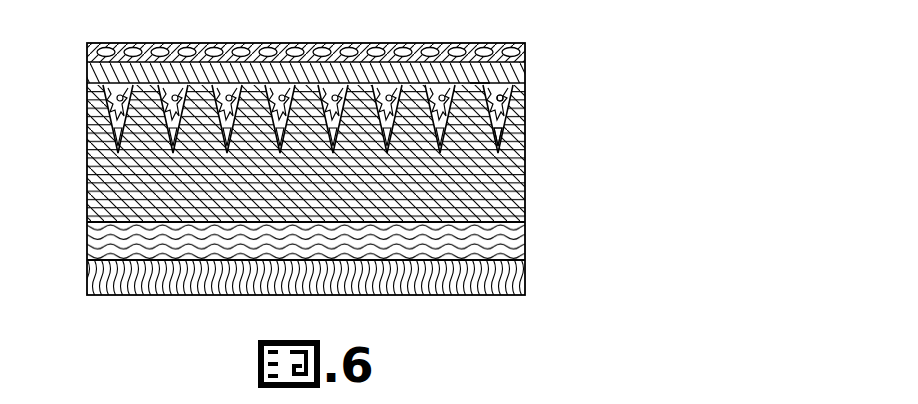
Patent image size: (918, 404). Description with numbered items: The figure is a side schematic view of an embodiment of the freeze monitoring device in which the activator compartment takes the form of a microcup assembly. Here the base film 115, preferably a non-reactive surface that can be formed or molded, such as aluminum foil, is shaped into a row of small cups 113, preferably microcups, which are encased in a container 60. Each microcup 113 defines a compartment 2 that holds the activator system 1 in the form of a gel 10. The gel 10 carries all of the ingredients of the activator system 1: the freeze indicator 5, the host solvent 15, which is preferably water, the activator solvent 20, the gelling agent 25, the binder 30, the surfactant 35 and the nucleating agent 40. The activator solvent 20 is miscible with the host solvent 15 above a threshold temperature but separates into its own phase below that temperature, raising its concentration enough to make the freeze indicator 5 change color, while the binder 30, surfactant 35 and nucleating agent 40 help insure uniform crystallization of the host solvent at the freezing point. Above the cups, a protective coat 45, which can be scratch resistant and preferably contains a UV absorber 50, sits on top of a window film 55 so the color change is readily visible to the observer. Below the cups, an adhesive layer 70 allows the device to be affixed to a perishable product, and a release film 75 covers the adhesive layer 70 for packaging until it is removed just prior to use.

The activator system 1 is at (117, 142).
The compartment 2 is at (525, 92).
The freeze indicator 5 is at (483, 82).
The gel 10 is at (505, 113).
The host solvent 15 is at (387, 85).
The activator solvent 20 is at (478, 84).
The gelling agent 25 is at (521, 163).
The binder 30 is at (437, 87).
The surfactant 35 is at (287, 85).
The nucleating agent 40 is at (503, 125).
The protective coat 45 is at (203, 42).
The UV absorber 50 is at (244, 48).
The window film 55 is at (88, 73).
The container 60 is at (525, 200).
The adhesive layer 70 is at (88, 238).
The release film 75 is at (88, 277).
The microcup 113 is at (108, 84).
The base film 115 is at (95, 125).